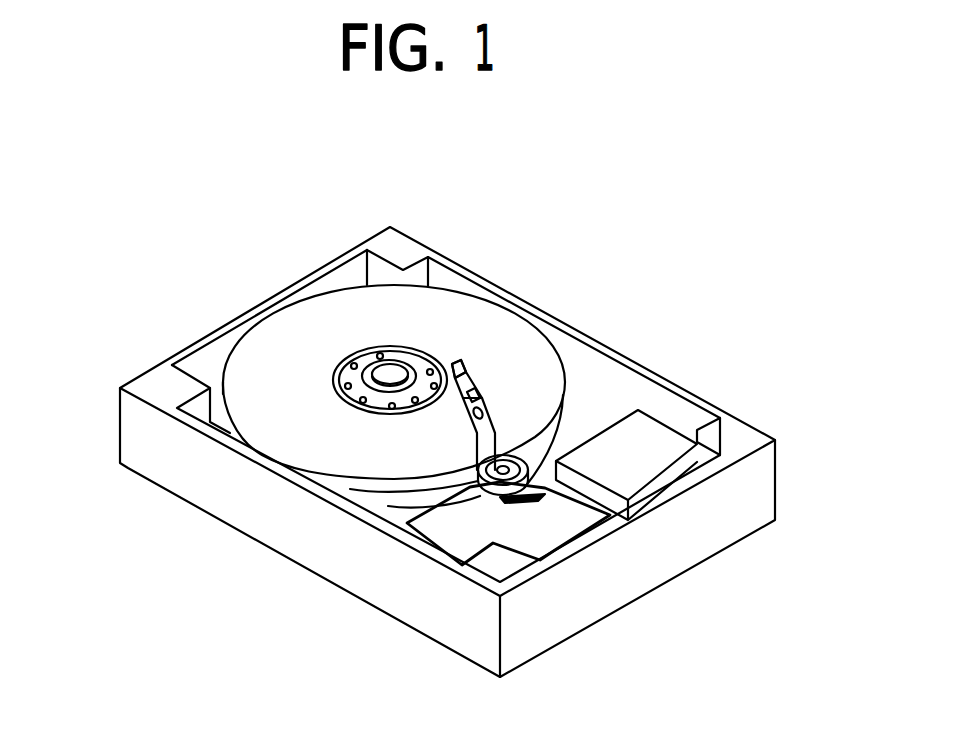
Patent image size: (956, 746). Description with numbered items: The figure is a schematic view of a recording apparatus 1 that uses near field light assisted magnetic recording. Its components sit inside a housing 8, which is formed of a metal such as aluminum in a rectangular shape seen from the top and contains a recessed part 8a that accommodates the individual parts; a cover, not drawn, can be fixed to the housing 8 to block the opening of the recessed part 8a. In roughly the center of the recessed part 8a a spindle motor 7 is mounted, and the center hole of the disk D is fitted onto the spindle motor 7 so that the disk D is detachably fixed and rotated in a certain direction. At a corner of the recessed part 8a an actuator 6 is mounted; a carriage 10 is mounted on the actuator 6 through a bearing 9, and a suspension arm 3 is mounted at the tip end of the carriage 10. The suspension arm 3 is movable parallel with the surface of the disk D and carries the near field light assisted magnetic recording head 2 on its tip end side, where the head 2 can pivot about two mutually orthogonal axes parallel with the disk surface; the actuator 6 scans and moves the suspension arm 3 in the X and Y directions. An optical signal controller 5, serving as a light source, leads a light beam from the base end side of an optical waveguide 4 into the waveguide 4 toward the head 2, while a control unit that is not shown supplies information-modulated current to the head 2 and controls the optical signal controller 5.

The recording apparatus 1 is at (746, 195).
The near field light assisted magnetic recording head 2 is at (455, 365).
The suspension arm 3 is at (495, 408).
The optical waveguide 4 is at (545, 518).
The optical signal controller 5 is at (648, 460).
The actuator 6 is at (562, 495).
The spindle motor 7 is at (388, 377).
The housing 8 is at (240, 318).
The recessed part 8a is at (213, 363).
The bearing 9 is at (562, 418).
The carriage 10 is at (503, 470).
The disk D is at (390, 506).